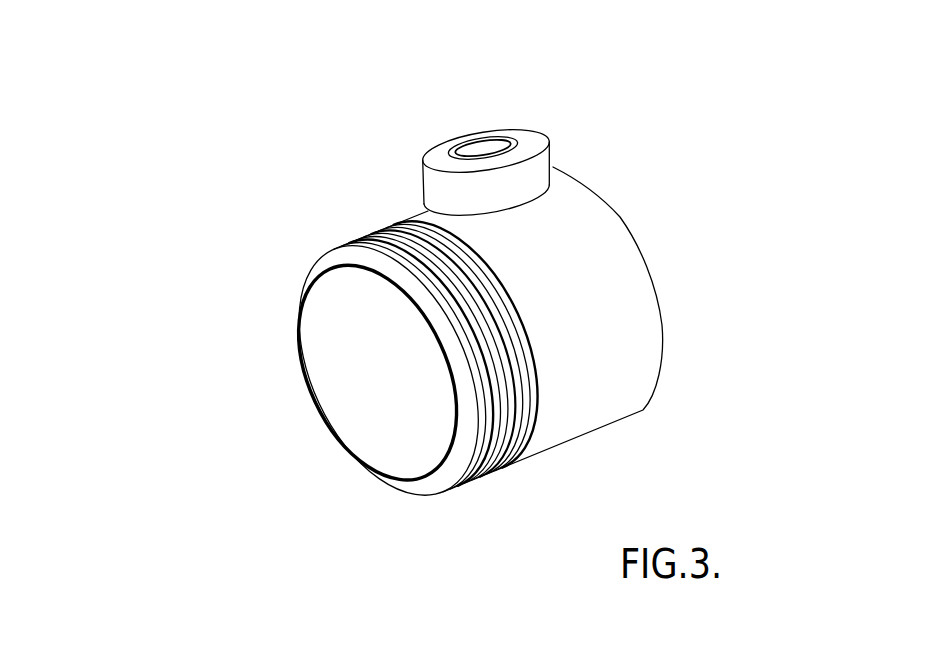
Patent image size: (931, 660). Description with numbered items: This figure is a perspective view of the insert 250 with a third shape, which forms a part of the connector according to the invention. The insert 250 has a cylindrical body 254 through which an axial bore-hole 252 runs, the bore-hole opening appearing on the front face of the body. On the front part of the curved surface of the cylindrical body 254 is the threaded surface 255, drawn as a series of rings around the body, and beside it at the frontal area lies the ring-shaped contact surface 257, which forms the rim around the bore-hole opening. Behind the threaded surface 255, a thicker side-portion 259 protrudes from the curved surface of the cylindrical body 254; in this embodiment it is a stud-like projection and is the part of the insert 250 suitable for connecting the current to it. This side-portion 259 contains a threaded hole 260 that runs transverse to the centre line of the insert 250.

The insert 250 is at (316, 183).
The axial bore-hole 252 is at (350, 345).
The cylindrical body 254 is at (640, 352).
The threaded surface 255 is at (472, 313).
The ring-shaped contact surface 257 is at (437, 485).
The thicker side-portion 259 is at (528, 175).
The threaded hole 260 is at (481, 148).